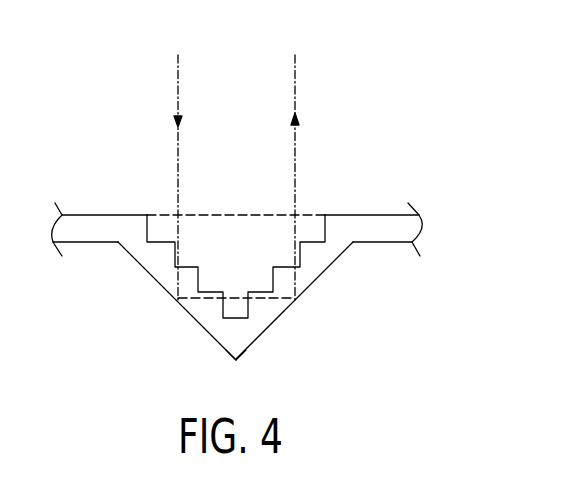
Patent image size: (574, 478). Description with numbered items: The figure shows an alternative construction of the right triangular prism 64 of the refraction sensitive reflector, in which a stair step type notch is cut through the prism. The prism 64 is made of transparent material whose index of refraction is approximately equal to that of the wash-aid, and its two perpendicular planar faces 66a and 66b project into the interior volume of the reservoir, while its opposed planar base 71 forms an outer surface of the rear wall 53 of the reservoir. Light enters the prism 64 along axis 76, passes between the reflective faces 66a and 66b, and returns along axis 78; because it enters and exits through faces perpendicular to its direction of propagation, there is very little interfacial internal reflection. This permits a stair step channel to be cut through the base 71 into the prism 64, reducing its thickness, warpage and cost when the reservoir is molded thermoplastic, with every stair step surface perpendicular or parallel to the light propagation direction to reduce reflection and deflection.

The rear wall 53 is at (377, 225).
The planar base 71 is at (235, 216).
The planar face 66a is at (195, 325).
The planar face 66b is at (280, 322).
The right triangular prism 64 is at (236, 337).
The axis 76 is at (178, 91).
The axis 78 is at (297, 91).